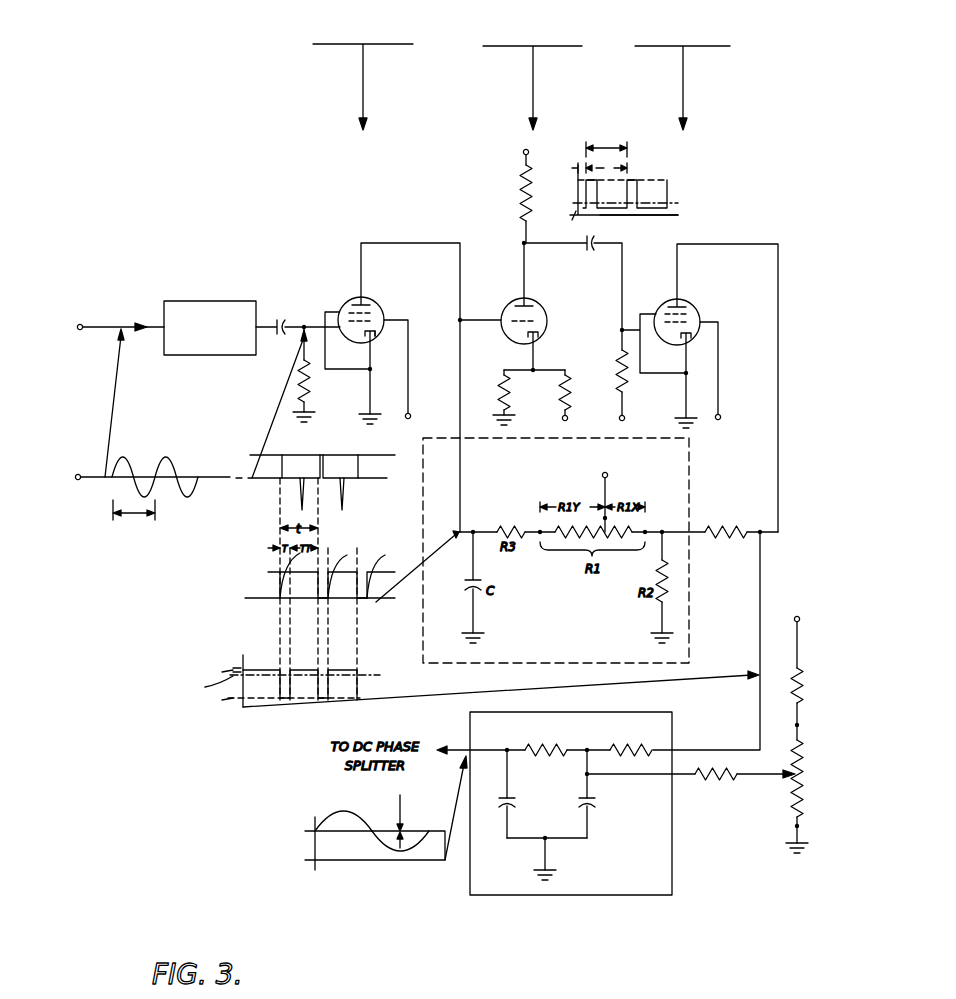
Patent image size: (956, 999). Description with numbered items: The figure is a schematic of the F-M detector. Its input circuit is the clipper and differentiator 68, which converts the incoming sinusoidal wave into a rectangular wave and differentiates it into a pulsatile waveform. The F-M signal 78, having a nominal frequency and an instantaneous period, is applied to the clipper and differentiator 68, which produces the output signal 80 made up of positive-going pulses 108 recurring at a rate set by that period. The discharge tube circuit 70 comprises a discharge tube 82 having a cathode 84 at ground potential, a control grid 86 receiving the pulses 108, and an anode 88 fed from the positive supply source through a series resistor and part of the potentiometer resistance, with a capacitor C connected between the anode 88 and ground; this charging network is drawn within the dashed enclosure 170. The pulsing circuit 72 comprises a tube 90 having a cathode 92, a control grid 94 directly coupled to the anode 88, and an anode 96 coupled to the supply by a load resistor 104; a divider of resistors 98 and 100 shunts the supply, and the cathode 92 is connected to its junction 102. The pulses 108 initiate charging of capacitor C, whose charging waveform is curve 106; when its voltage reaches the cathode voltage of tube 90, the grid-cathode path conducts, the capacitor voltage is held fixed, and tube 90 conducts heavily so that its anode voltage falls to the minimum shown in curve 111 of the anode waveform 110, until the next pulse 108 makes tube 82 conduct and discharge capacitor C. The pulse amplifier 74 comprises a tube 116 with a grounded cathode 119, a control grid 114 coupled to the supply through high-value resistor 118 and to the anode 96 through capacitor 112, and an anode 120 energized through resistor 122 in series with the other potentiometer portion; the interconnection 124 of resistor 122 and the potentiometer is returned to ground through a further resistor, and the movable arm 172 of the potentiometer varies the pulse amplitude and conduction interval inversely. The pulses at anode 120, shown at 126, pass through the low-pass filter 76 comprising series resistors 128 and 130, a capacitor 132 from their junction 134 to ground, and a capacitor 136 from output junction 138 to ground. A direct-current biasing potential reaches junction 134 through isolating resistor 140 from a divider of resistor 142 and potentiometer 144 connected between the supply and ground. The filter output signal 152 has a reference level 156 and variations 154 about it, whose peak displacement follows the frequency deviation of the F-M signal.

The clipper and differentiator 68 is at (214, 300).
The discharge tube circuit 70 is at (350, 71).
The pulsing circuit 72 is at (532, 71).
The pulse amplifier 74 is at (682, 71).
The low-pass filter 76 is at (641, 712).
The F-M signal 78 is at (108, 484).
The output signal 80 is at (372, 480).
The discharge tube 82 is at (380, 308).
The cathode 84 is at (358, 344).
The control grid 86 is at (368, 342).
The anode 88 is at (351, 301).
The tube 90 is at (546, 304).
The cathode 92 is at (513, 338).
The control grid 94 is at (511, 318).
The anode 96 is at (518, 302).
The resistor 98 is at (570, 392).
The resistor 100 is at (503, 398).
The junction 102 is at (518, 378).
The load resistor 104 is at (522, 212).
The charging waveform 106 is at (362, 598).
The positive-going pulses 108 is at (356, 455).
The pulse train waveform 110 is at (610, 197).
The curve 111 is at (615, 215).
The capacitor 112 is at (590, 252).
The control grid 114 is at (690, 340).
The tube 116 is at (699, 308).
The resistor 118 is at (625, 386).
The cathode 119 is at (652, 343).
The anode 120 is at (672, 303).
The resistor 122 is at (712, 540).
The interconnection 124 is at (665, 529).
The waveform 126 is at (240, 668).
The resistor 128 is at (628, 746).
The resistor 130 is at (533, 758).
The capacitor 132 is at (582, 806).
The junction 134 is at (588, 749).
The capacitor 136 is at (512, 806).
The junction 138 is at (486, 750).
The isolating resistor 140 is at (716, 782).
The resistor 142 is at (803, 699).
The potentiometer 144 is at (803, 768).
The output signal 152 is at (313, 842).
The signal variations 154 is at (392, 856).
The reference level 156 is at (436, 840).
The discharge circuit 170 is at (692, 475).
The movable arm 172 is at (607, 494).